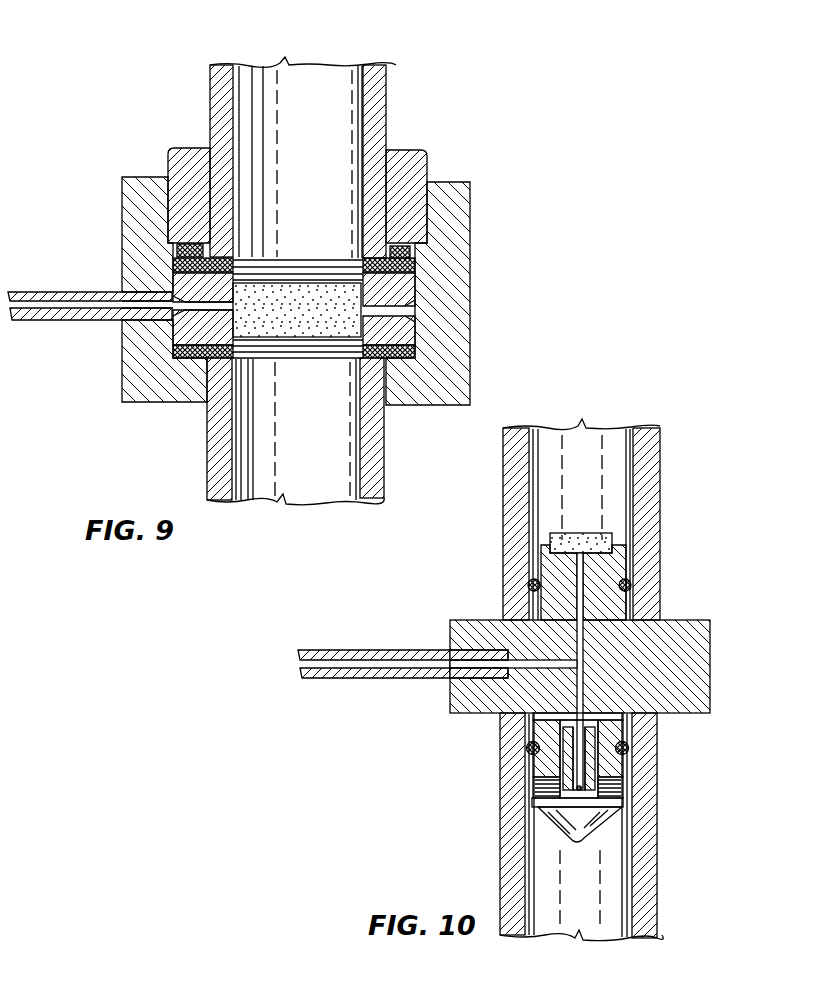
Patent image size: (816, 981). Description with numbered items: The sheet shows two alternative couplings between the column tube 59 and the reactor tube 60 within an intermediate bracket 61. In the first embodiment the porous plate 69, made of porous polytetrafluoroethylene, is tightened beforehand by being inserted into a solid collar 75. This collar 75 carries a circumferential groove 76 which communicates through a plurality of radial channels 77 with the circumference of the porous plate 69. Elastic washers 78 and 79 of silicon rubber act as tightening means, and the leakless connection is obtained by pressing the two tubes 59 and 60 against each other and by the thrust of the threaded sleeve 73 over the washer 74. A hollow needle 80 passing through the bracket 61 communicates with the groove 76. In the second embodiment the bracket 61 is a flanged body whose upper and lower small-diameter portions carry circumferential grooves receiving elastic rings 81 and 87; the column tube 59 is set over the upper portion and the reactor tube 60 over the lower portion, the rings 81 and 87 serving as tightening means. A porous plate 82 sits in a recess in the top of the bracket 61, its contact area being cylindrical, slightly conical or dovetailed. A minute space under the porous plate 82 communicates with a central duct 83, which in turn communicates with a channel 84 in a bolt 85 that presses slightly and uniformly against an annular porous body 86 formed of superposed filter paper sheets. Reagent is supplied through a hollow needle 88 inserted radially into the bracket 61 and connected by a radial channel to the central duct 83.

In FIG. 9, the column tube 59 is at (215, 97).
In FIG. 10, the column tube 59 is at (505, 490).
In FIG. 9, the reactor tube 60 is at (215, 455).
In FIG. 10, the reactor tube 60 is at (643, 873).
In FIG. 9, the intermediate bracket 61 is at (455, 232).
In FIG. 10, the intermediate bracket 61 is at (697, 668).
In FIG. 9, the porous plate 69 is at (320, 322).
In FIG. 9, the threaded sleeve 73 is at (192, 165).
In FIG. 9, the washer 74 is at (178, 250).
In FIG. 9, the solid collar 75 is at (410, 290).
In FIG. 9, the circumferential groove 76 is at (170, 290).
In FIG. 9, the radial channels 77 is at (185, 350).
In FIG. 9, the elastic washer 78 is at (407, 362).
In FIG. 9, the elastic washer 79 is at (410, 267).
In FIG. 9, the hollow needle 80 is at (60, 320).
In FIG. 10, the elastic ring 81 is at (640, 583).
In FIG. 10, the porous plate 82 is at (602, 533).
In FIG. 10, the central duct 83 is at (605, 560).
In FIG. 10, the channel 84 is at (535, 803).
In FIG. 10, the bolt 85 is at (612, 818).
In FIG. 10, the annular porous body 86 is at (628, 797).
In FIG. 10, the elastic ring 87 is at (640, 745).
In FIG. 10, the hollow needle 88 is at (388, 680).